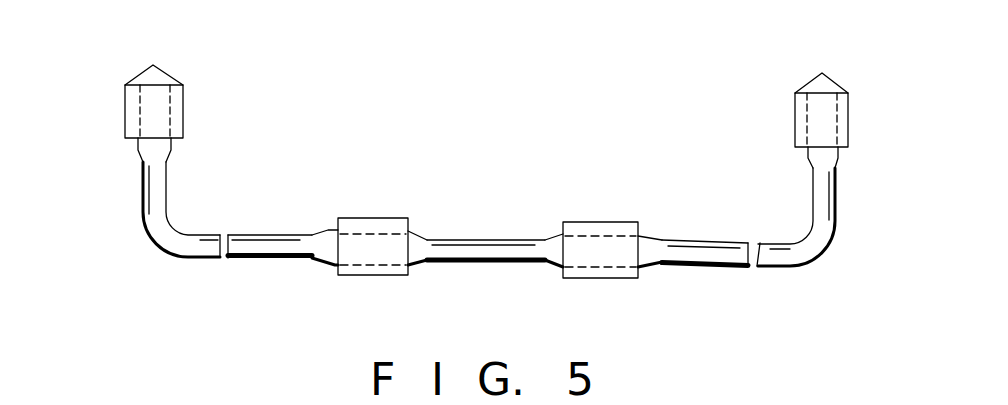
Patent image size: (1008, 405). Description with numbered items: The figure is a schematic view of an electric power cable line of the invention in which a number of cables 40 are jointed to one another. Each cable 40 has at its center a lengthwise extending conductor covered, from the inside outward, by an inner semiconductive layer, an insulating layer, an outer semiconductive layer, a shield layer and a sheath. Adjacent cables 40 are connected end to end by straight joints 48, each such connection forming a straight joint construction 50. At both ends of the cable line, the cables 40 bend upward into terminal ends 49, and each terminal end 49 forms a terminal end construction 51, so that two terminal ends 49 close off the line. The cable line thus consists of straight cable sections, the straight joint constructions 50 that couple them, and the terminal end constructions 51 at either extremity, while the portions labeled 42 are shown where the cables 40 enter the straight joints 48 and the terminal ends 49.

The cable 40 is at (257, 224).
The fitting 42 is at (168, 150).
The straight joint 48 is at (375, 250).
The terminal end 49 is at (148, 113).
The straight joint construction 50 is at (367, 209).
The terminal end construction 51 is at (193, 88).